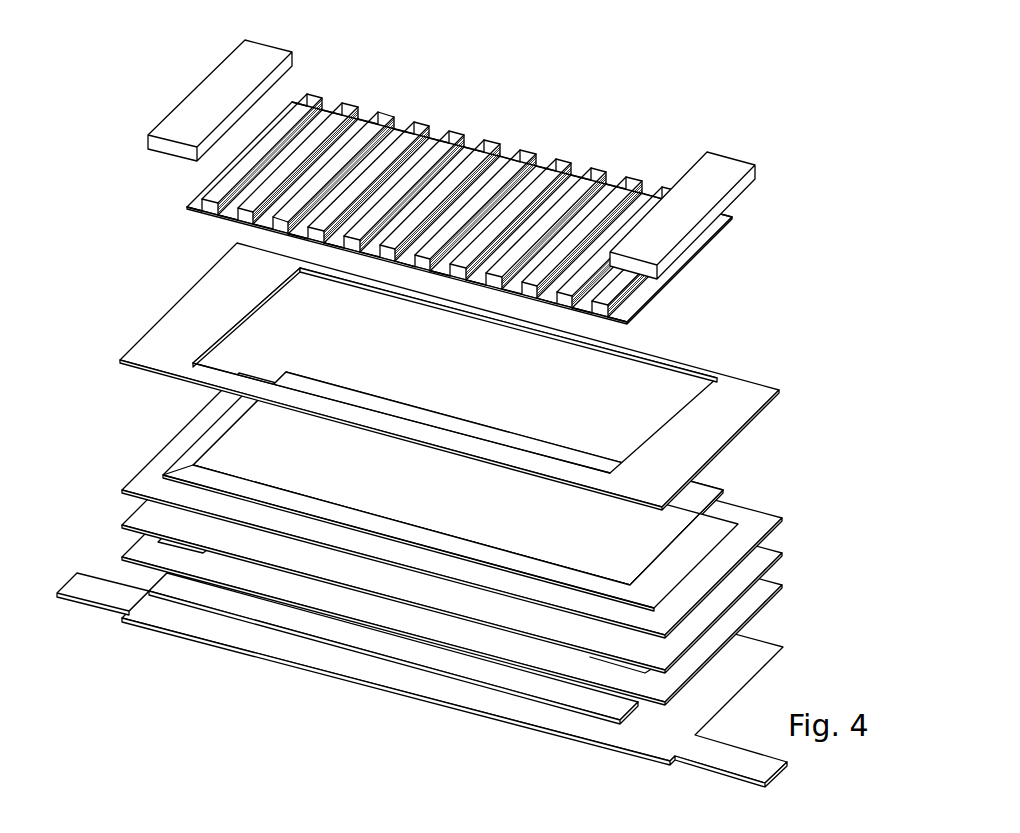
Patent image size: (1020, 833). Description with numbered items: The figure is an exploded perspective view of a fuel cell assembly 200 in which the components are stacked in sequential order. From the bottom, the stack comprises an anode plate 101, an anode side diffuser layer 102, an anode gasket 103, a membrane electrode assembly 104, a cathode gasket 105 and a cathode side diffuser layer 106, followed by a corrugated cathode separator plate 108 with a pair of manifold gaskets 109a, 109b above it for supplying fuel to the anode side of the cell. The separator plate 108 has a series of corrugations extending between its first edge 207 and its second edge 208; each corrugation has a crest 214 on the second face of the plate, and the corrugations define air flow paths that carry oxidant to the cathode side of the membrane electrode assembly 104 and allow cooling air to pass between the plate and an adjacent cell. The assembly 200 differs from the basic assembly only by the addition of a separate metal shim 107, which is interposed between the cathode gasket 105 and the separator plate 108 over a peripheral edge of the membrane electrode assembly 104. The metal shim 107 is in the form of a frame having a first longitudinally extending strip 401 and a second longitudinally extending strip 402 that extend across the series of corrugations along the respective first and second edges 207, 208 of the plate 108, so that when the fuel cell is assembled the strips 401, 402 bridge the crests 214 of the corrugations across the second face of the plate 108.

The anode plate 101 is at (735, 678).
The anode side diffuser layer 102 is at (255, 607).
The anode gasket 103 is at (763, 590).
The membrane electrode assembly 104 is at (763, 557).
The cathode gasket 105 is at (763, 522).
The cathode side diffuser layer 106 is at (483, 468).
The metal shim 107 is at (471, 376).
The corrugated cathode separator plate 108 is at (555, 172).
The manifold gasket 109a is at (720, 162).
The manifold gasket 109b is at (267, 47).
The fuel cell assembly 200 is at (620, 52).
The first edge 207 is at (230, 213).
The second edge 208 is at (430, 213).
The crest 214 is at (407, 267).
The first longitudinally extending strip 401 is at (343, 408).
The second longitudinally extending strip 402 is at (522, 326).